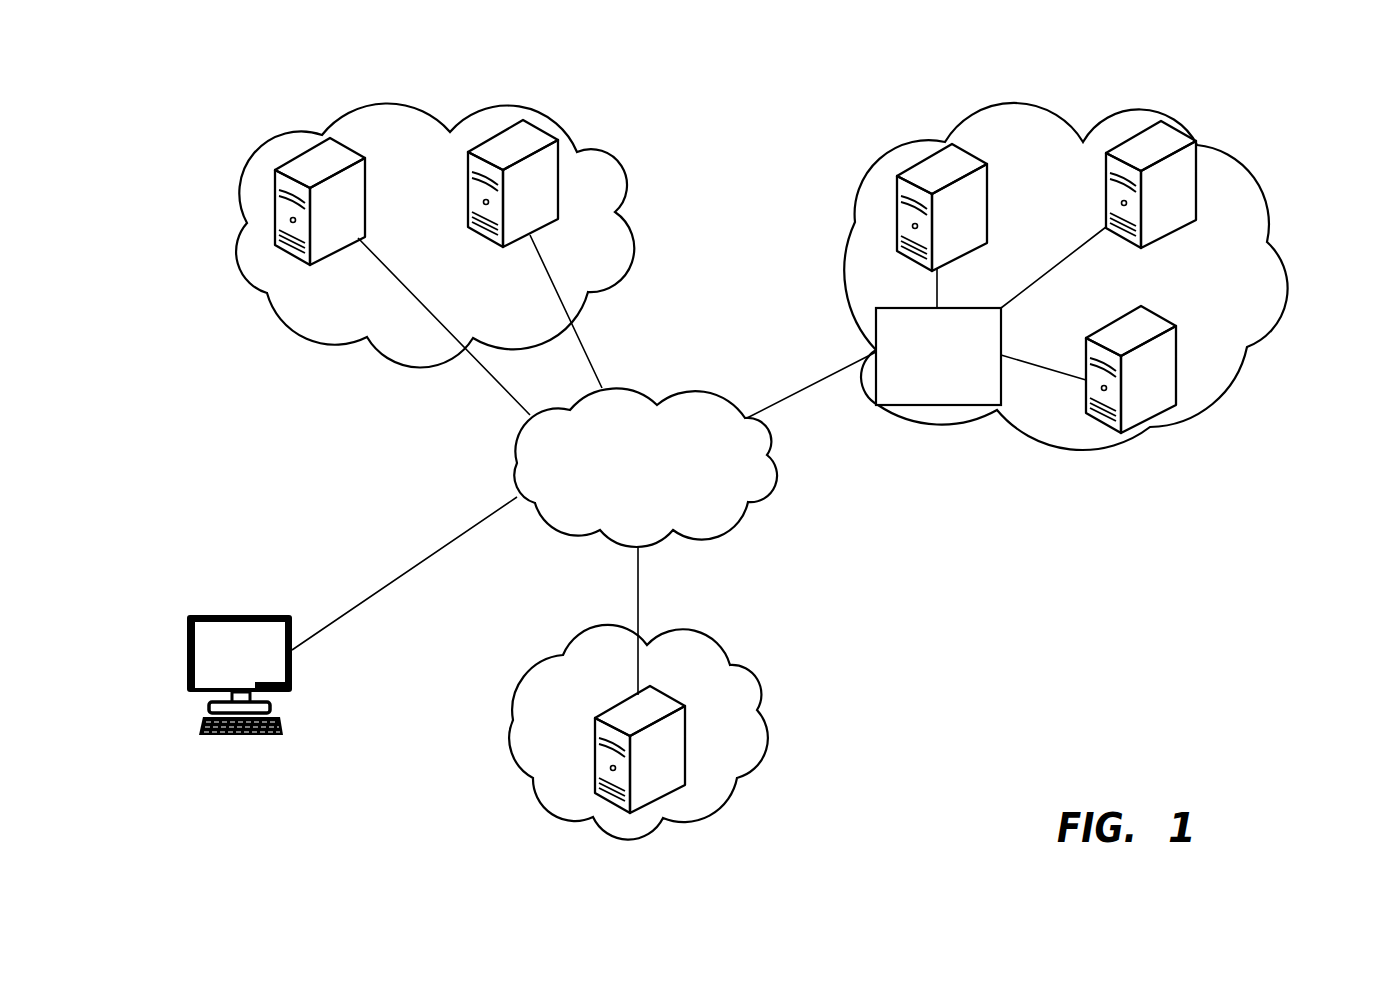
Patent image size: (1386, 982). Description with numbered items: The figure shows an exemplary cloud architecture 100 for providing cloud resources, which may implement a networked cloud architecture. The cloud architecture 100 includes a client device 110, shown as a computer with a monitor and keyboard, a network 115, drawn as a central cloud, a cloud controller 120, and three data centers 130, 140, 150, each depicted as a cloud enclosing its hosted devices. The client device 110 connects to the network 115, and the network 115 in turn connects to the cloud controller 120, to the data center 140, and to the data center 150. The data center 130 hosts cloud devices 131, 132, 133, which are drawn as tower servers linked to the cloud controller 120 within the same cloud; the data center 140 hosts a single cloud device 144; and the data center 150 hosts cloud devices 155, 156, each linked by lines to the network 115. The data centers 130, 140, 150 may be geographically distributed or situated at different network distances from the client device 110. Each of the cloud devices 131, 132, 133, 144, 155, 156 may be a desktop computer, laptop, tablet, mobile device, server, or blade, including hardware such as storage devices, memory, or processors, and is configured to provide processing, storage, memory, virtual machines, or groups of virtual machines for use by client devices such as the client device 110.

The cloud architecture 100 is at (212, 84).
The client device 110 is at (240, 613).
The network 115 is at (707, 391).
The cloud controller 120 is at (891, 407).
The data center 130 is at (1290, 286).
The cloud device 131 is at (987, 200).
The cloud device 132 is at (1177, 132).
The cloud device 133 is at (1160, 316).
The data center 140 is at (768, 742).
The cloud device 144 is at (618, 706).
The data center 150 is at (630, 245).
The cloud device 155 is at (365, 195).
The cloud device 156 is at (540, 133).